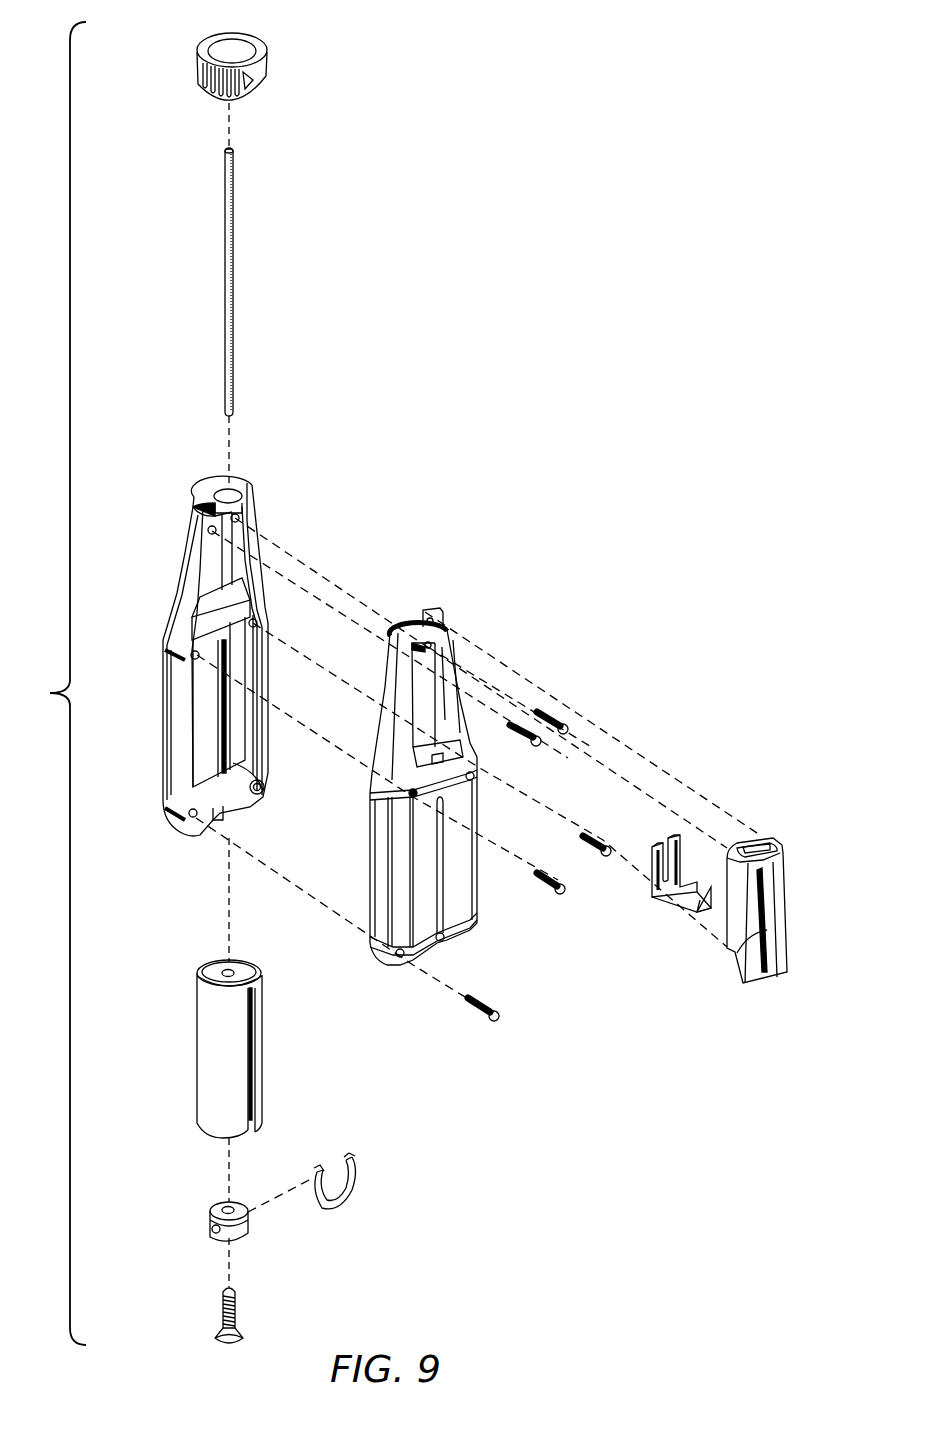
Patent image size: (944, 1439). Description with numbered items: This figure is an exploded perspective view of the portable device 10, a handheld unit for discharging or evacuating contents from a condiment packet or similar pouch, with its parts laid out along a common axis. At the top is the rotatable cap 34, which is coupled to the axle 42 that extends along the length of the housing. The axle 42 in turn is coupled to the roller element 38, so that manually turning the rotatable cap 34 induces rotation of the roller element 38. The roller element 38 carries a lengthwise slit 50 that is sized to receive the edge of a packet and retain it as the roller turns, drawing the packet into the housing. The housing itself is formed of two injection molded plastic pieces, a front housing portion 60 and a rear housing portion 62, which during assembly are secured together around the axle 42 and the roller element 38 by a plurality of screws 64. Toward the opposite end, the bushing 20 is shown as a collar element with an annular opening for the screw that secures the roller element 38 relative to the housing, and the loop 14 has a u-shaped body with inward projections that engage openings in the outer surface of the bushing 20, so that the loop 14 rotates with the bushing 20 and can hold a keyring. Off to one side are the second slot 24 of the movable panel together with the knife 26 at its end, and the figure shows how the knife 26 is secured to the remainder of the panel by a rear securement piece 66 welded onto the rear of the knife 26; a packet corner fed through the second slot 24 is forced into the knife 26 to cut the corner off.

The portable device 10 is at (50, 683).
The loop 14 is at (357, 1195).
The bushing 20 is at (217, 1207).
The second slot 24 is at (740, 953).
The knife 26 is at (695, 908).
The rotatable cap 34 is at (220, 50).
The roller element 38 is at (237, 1017).
The axle 42 is at (238, 284).
The lengthwise slit 50 is at (252, 1085).
The front housing portion 60 is at (432, 612).
The rear housing portion 62 is at (216, 492).
The screws 64 is at (527, 727).
The rear securement piece 66 is at (652, 848).